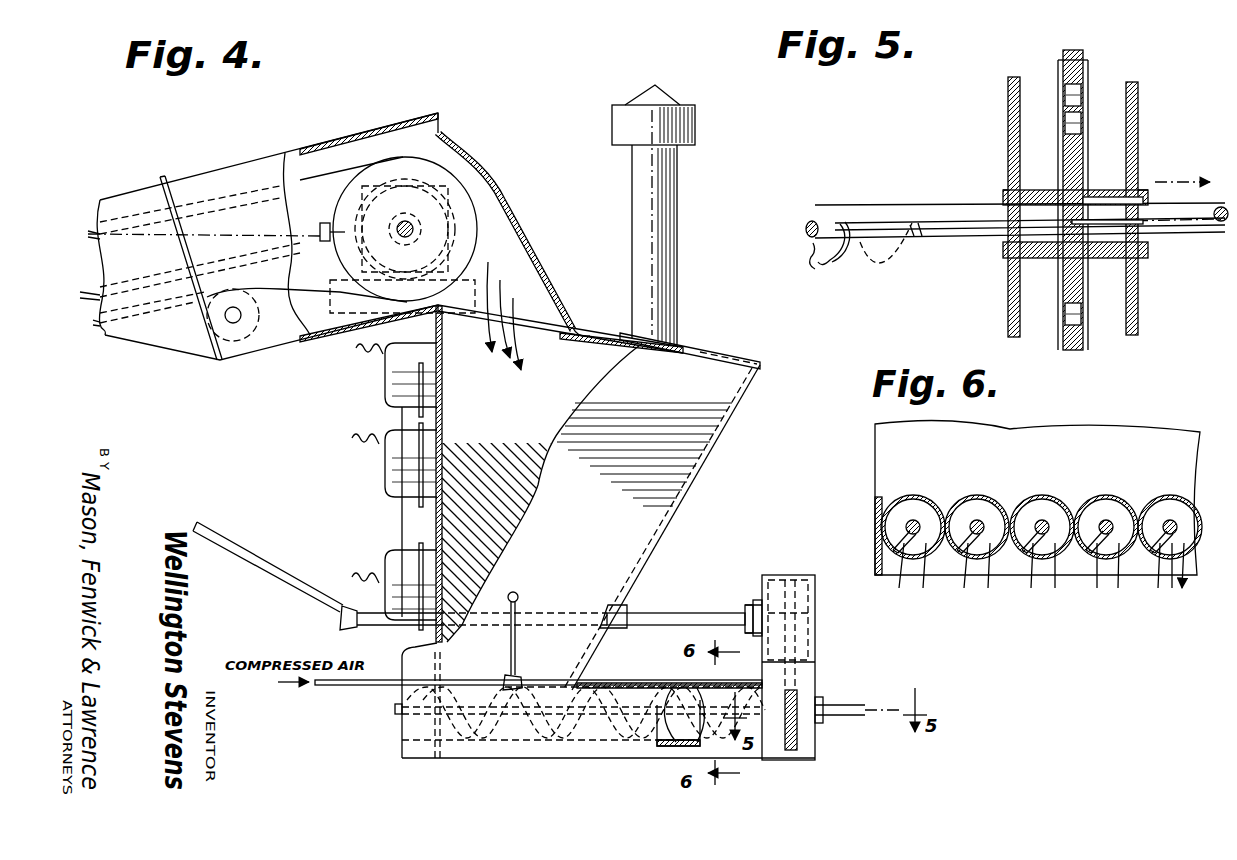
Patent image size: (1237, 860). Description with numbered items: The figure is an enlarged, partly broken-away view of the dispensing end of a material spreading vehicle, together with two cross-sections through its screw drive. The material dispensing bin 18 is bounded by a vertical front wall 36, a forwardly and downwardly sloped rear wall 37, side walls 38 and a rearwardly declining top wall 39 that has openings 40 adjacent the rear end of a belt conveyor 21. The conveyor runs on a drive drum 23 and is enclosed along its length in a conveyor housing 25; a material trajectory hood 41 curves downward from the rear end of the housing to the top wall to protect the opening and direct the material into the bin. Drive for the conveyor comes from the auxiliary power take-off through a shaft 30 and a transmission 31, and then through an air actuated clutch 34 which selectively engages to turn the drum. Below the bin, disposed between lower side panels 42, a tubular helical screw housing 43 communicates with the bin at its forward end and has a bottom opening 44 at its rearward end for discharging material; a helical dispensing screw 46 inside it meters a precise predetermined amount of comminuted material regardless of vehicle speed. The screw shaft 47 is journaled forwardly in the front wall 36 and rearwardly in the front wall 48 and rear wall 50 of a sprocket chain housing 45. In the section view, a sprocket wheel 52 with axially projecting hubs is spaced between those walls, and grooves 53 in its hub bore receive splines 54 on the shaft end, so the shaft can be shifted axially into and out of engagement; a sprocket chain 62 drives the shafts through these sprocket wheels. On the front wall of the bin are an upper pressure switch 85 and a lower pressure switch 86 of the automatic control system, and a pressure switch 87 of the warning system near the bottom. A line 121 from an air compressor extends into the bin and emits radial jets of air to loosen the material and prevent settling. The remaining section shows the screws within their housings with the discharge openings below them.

In FIG. 4, the material dispensing bin 18 is at (728, 357).
In FIG. 4, the belt conveyor 21 is at (305, 153).
In FIG. 4, the drive drum 23 is at (416, 153).
In FIG. 4, the conveyor housing 25 is at (124, 194).
In FIG. 4, the shaft 30 is at (135, 277).
In FIG. 4, the transmission 31 is at (457, 177).
In FIG. 4, the air actuated clutch 34 is at (460, 229).
In FIG. 4, the vertical front wall 36 is at (435, 522).
In FIG. 4, the rear wall 37 is at (694, 480).
In FIG. 6, the rear wall 37 is at (889, 462).
In FIG. 4, the side wall 38 is at (660, 511).
In FIG. 4, the top wall 39 is at (697, 350).
In FIG. 4, the opening 40 is at (581, 334).
In FIG. 4, the material trajectory hood 41 is at (533, 258).
In FIG. 4, the lower side panel 42 is at (542, 752).
In FIG. 6, the lower side panel 42 is at (875, 520).
In FIG. 4, the tubular helical screw housing 43 is at (607, 678).
In FIG. 6, the tubular helical screw housing 43 is at (993, 488).
In FIG. 6, the bottom opening 44 is at (960, 552).
In FIG. 4, the sprocket chain housing 45 is at (819, 605).
In FIG. 5, the sprocket chain housing 45 is at (1141, 95).
In FIG. 4, the helical dispensing screw 46 is at (517, 698).
In FIG. 5, the helical dispensing screw 46 is at (826, 265).
In FIG. 6, the helical dispensing screw 46 is at (1097, 528).
In FIG. 4, the shaft 47 is at (467, 760).
In FIG. 5, the shaft 47 is at (978, 240).
In FIG. 6, the shaft 47 is at (1041, 519).
In FIG. 4, the front wall 48 is at (768, 640).
In FIG. 5, the front wall 48 is at (1008, 130).
In FIG. 4, the rear wall 50 is at (817, 648).
In FIG. 5, the rear wall 50 is at (1138, 124).
In FIG. 4, the sprocket wheel 52 is at (798, 733).
In FIG. 5, the sprocket wheel 52 is at (1067, 157).
In FIG. 5, the groove 53 is at (1097, 200).
In FIG. 5, the spline 54 is at (1118, 240).
In FIG. 5, the sprocket chain 62 is at (1083, 63).
In FIG. 4, the upper pressure switch 85 is at (380, 390).
In FIG. 4, the lower pressure switch 86 is at (382, 483).
In FIG. 4, the pressure switch 87 is at (383, 566).
In FIG. 4, the line 121 is at (517, 593).